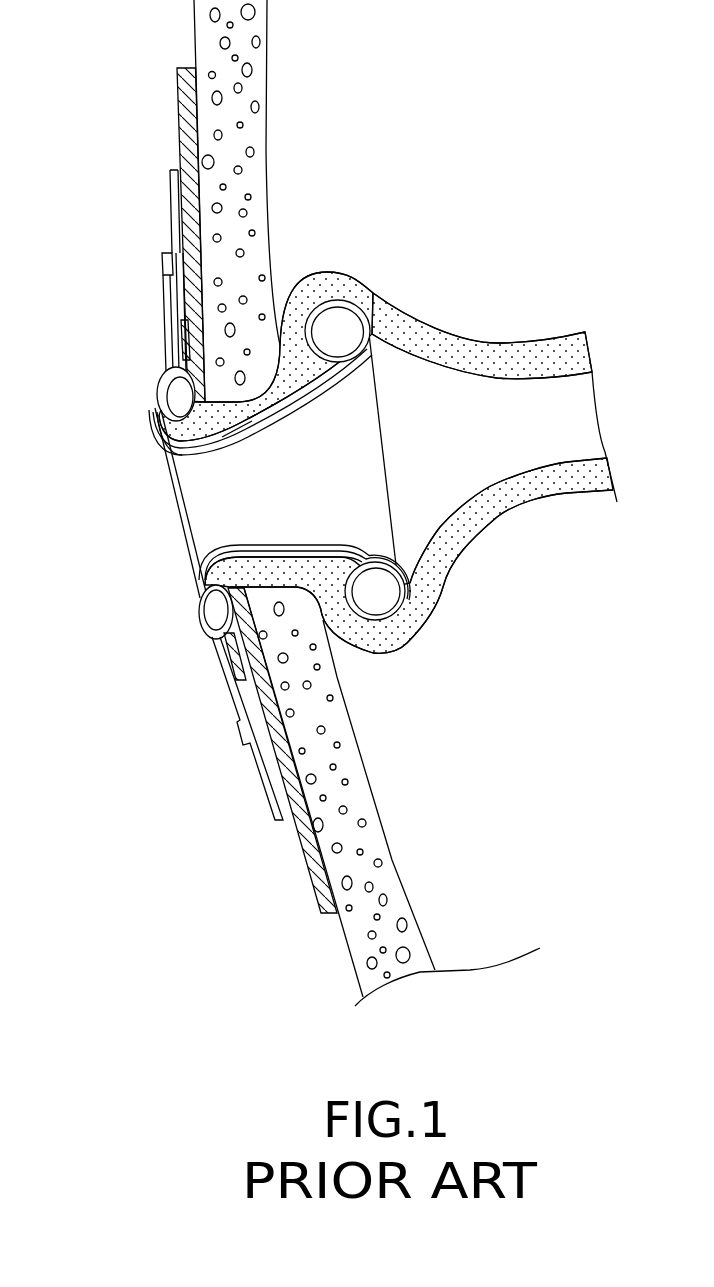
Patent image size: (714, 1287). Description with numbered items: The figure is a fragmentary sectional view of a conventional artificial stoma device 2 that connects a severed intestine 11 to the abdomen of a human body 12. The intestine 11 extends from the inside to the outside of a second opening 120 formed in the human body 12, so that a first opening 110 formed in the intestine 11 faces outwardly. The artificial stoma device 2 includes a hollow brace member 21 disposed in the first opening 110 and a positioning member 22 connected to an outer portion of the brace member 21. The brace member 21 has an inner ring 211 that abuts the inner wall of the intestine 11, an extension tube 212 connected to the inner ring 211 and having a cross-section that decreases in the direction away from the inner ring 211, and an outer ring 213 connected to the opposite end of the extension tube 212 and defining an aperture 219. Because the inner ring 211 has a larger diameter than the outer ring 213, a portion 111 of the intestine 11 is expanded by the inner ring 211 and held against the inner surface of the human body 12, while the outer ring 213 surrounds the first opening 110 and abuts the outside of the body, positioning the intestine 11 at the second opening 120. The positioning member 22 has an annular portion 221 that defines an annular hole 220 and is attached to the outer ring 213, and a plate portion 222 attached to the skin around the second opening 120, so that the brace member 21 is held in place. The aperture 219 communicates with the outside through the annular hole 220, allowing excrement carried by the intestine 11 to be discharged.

The artificial stoma device 2 is at (135, 533).
The intestine 11 is at (514, 302).
The human body 12 is at (180, 24).
The brace member 21 is at (337, 270).
The positioning member 22 is at (148, 214).
The first opening 110 is at (228, 437).
The portion of the intestine 111 is at (388, 645).
The second opening 120 is at (253, 412).
The inner ring 211 is at (363, 303).
The extension tube 212 is at (345, 379).
The outer ring 213 is at (210, 633).
The aperture 219 is at (180, 557).
The annular hole 220 is at (160, 452).
The annular portion 221 is at (156, 381).
The plate portion 222 is at (160, 262).